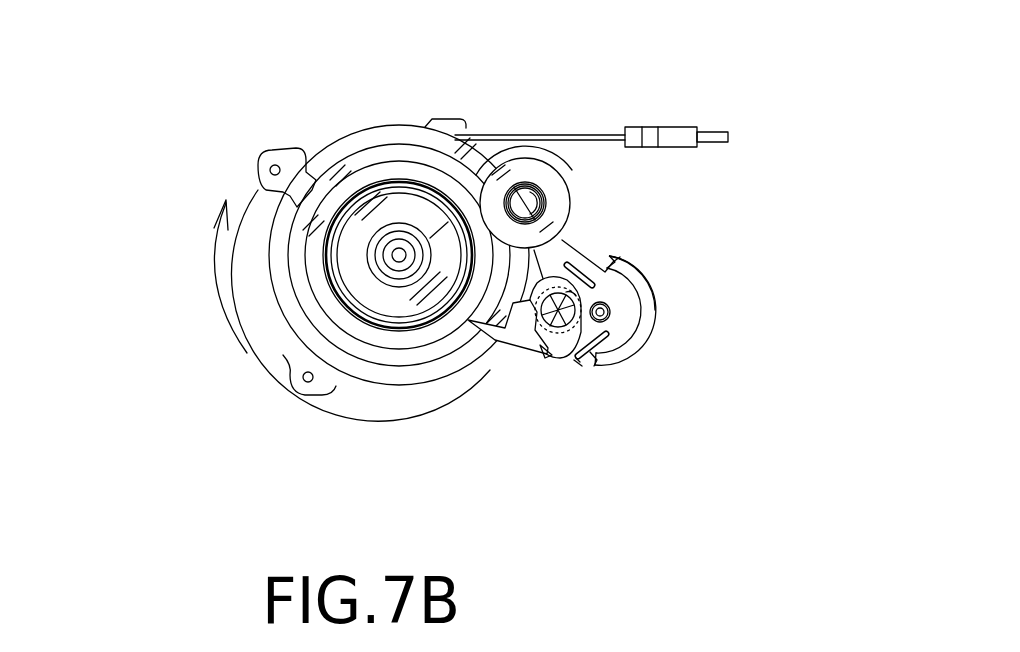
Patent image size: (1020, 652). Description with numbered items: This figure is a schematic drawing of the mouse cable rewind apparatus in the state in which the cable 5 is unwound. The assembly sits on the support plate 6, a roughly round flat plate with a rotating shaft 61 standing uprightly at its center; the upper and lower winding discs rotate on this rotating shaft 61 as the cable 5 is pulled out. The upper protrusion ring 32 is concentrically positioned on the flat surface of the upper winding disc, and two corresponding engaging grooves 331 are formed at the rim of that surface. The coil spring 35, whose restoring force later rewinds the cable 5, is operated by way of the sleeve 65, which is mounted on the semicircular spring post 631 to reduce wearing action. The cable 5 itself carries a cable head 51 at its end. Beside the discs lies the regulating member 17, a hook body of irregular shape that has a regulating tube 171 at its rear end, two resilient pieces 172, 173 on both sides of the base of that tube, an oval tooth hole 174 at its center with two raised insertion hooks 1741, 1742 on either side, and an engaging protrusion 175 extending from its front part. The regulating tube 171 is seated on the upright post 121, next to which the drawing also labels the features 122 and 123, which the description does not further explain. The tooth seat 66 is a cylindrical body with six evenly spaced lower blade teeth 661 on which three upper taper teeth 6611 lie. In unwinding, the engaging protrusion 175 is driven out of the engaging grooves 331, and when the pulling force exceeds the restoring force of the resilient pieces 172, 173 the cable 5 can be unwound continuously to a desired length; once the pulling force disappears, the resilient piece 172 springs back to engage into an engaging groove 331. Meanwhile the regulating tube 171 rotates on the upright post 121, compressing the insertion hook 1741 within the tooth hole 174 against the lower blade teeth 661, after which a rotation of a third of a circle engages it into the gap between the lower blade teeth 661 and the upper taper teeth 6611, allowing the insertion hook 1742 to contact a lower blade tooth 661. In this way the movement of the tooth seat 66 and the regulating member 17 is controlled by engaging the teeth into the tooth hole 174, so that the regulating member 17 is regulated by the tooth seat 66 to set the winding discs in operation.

The cable 5 is at (520, 170).
The cable head 51 is at (658, 132).
The semicircular spring post 631 is at (521, 178).
The sleeve 65 is at (538, 192).
The upper protrusion ring 32 is at (345, 200).
The engaging grooves 331 is at (295, 188).
The rotating shaft 61 is at (383, 255).
The spring 35 is at (558, 198).
The support plate 6 is at (277, 368).
The engaging protrusion 175 is at (490, 370).
The tooth seat 66 is at (528, 350).
The upper taper teeth 6611 is at (547, 353).
The lower blade teeth 661 is at (573, 315).
The resilient piece 173 is at (578, 260).
The tooth hole 174 is at (581, 364).
The insertion hook 1742 is at (583, 366).
The resilient piece 172 is at (578, 358).
The regulating member 17 is at (620, 353).
The arc segment 122 is at (623, 258).
The arc end 123 is at (598, 367).
The upright post 121 is at (608, 312).
The regulating tube 171 is at (605, 304).
The insertion hook 1741 is at (572, 295).